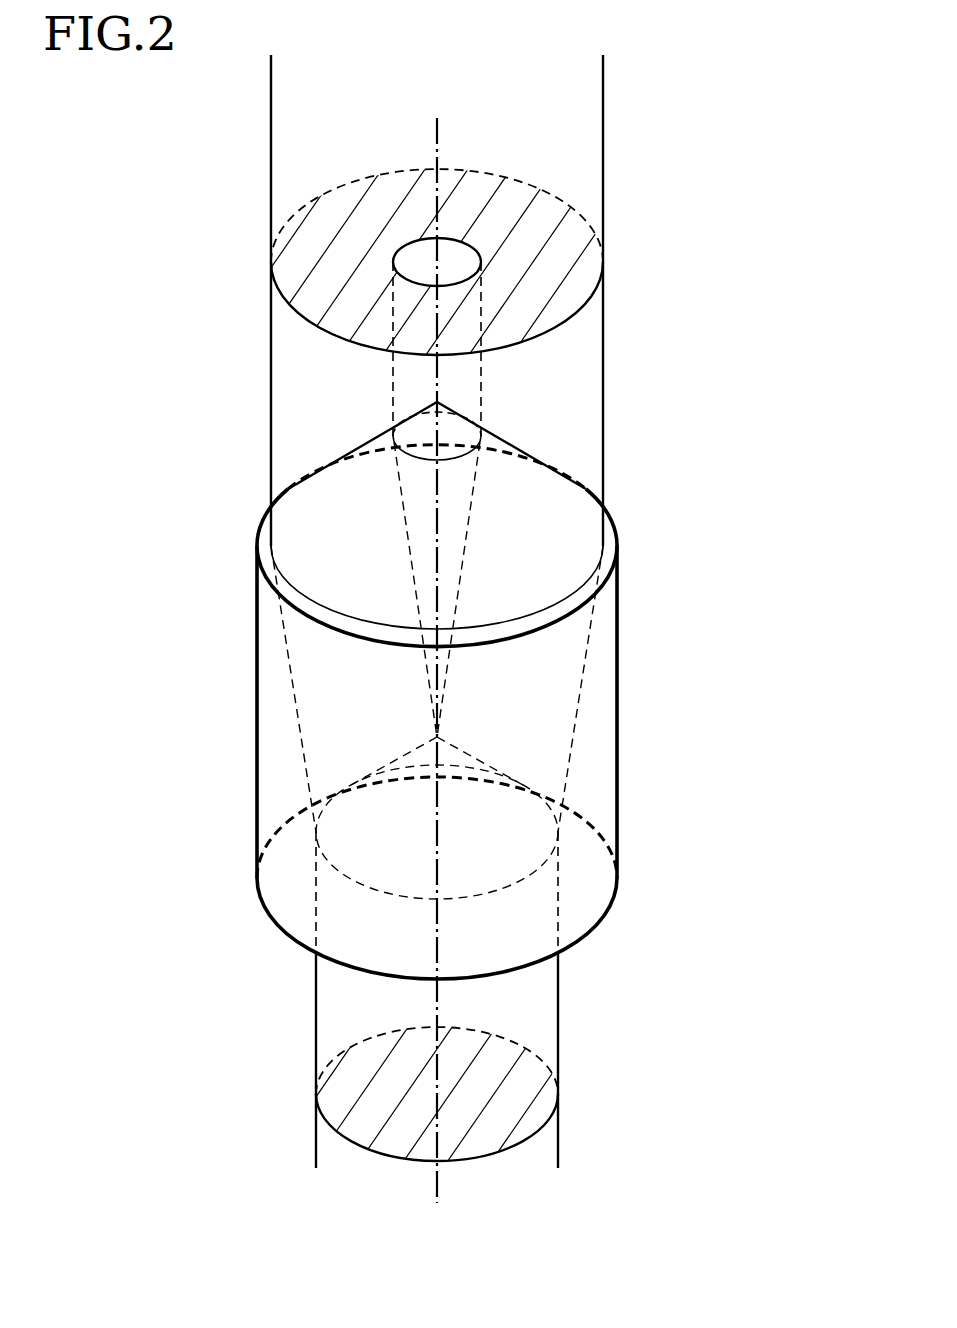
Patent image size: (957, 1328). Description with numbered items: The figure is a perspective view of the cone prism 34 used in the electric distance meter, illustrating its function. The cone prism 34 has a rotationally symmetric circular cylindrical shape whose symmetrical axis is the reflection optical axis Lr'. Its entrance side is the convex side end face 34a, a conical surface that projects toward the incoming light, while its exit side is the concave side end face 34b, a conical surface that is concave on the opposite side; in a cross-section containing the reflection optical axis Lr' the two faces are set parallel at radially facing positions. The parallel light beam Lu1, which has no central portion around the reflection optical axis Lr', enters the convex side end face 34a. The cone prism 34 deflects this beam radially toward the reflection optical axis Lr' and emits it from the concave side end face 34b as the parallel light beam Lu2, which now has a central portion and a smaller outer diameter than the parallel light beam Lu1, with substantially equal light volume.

The cone prism 34 is at (527, 691).
The convex side end face 34a is at (540, 518).
The concave side end face 34b is at (575, 890).
The parallel light beam Lu1 is at (603, 114).
The parallel light beam Lu2 is at (560, 1038).
The reflection optical axis Lr' is at (485, 652).